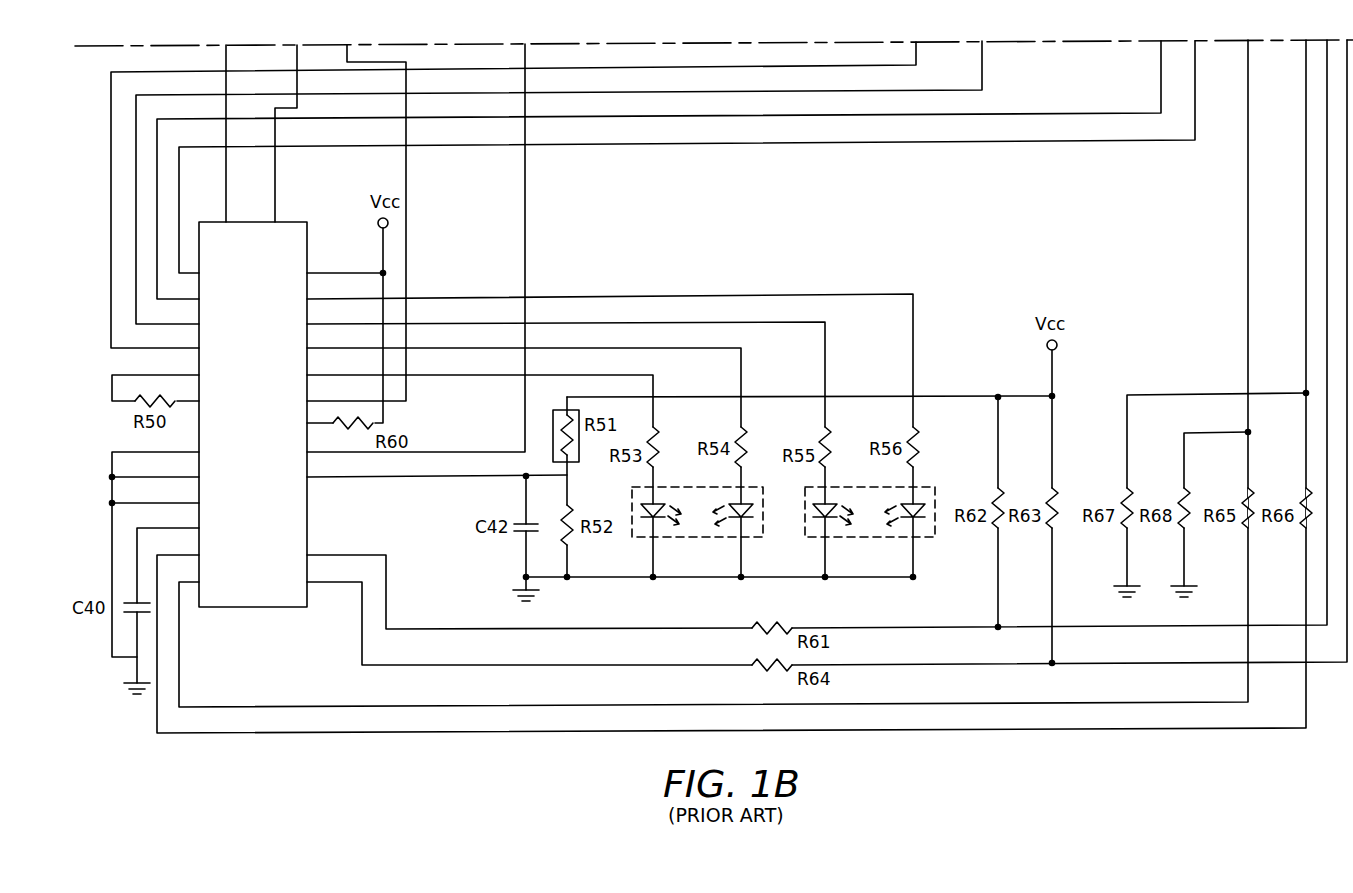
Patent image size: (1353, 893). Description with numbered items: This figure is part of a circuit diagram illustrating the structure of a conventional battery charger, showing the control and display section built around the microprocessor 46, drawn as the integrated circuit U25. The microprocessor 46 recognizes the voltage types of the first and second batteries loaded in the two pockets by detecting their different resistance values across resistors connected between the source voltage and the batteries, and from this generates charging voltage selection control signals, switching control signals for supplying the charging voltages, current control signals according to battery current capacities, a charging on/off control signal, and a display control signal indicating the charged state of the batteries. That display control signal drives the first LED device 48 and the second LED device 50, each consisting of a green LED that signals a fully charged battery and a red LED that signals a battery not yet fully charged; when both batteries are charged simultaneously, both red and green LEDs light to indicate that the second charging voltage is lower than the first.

The microcontroller U25 is at (253, 398).
The microprocessor 46 is at (293, 215).
The first LED device 48 is at (683, 487).
The second LED device 50 is at (855, 487).